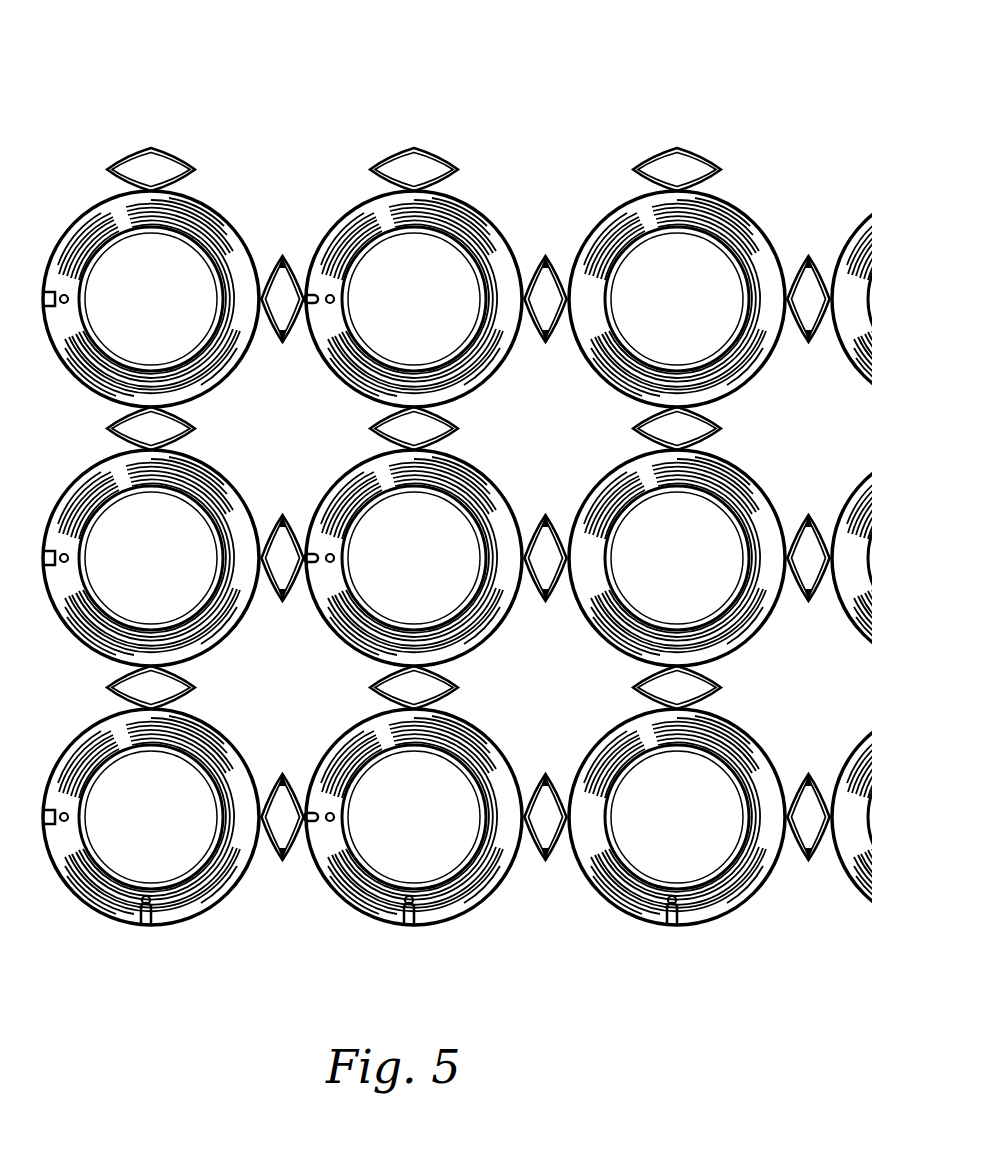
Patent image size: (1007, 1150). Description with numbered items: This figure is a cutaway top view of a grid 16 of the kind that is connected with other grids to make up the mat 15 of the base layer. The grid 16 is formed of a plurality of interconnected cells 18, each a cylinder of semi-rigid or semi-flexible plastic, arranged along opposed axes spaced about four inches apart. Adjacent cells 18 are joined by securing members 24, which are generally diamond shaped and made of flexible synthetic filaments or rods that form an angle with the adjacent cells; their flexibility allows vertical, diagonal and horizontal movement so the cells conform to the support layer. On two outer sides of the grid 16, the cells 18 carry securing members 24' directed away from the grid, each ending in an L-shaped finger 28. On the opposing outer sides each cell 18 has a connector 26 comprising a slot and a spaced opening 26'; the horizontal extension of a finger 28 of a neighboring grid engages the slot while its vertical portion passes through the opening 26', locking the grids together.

The mat 15 is at (438, 60).
The grid 16 is at (224, 126).
The cell 18 is at (226, 208).
The securing member 24 is at (671, 558).
The securing member 24' is at (266, 558).
The connector 26 is at (360, 619).
The opening 26' is at (368, 625).
The L-shaped finger 28 is at (311, 306).